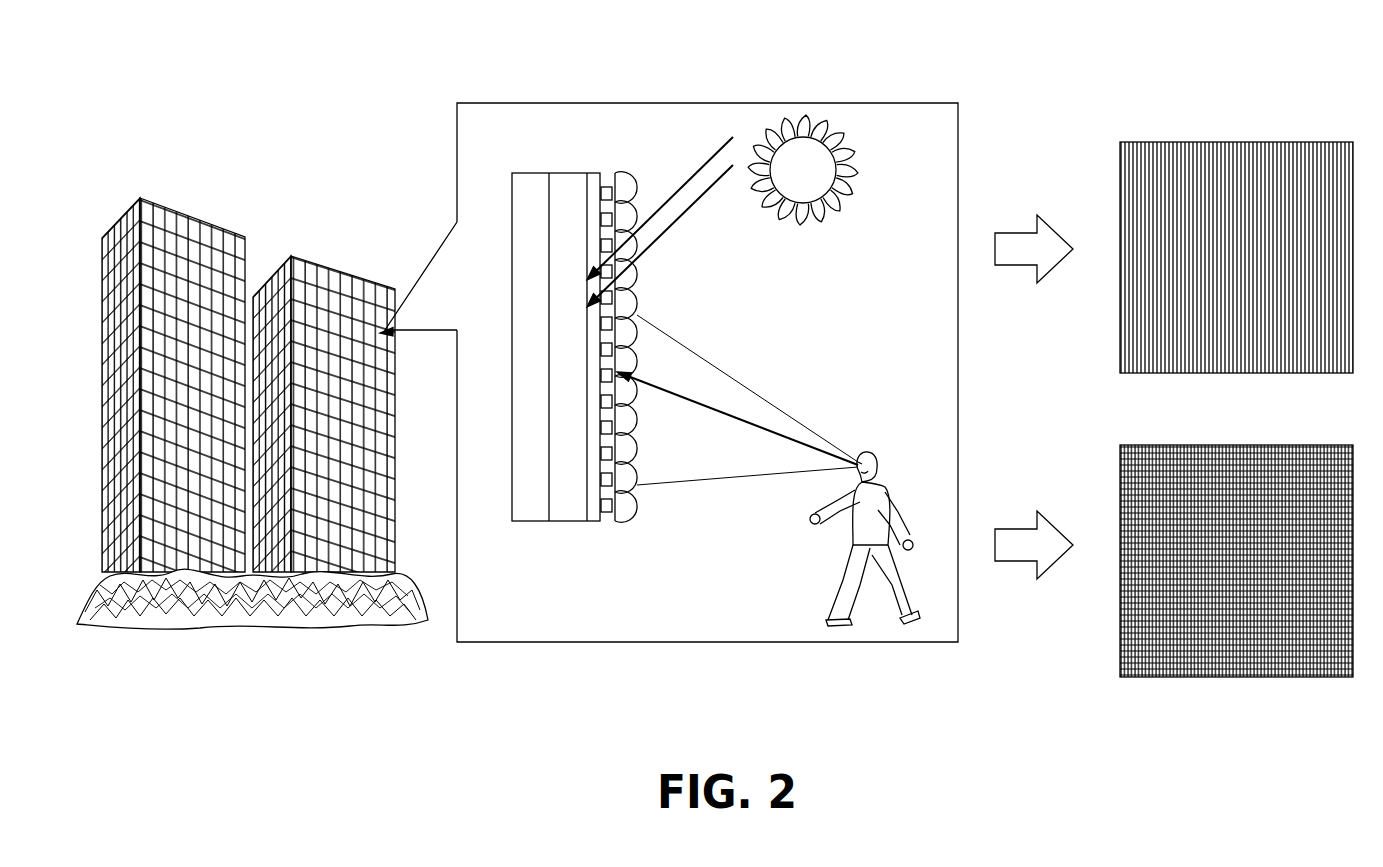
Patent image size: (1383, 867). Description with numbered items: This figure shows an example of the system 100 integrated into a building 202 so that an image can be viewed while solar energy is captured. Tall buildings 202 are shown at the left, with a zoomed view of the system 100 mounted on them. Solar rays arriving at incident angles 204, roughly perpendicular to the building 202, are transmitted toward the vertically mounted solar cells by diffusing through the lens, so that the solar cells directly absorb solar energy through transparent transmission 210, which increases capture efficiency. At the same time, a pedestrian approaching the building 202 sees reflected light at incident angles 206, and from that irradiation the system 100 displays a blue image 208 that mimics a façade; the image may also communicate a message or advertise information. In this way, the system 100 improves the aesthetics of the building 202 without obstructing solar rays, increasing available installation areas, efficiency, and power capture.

The system 100 is at (632, 167).
The building 202 is at (228, 648).
The incident angles 204 is at (698, 167).
The incident angles 206 is at (780, 437).
The blue image 208 is at (1212, 678).
The transparent transmission 210 is at (1168, 140).